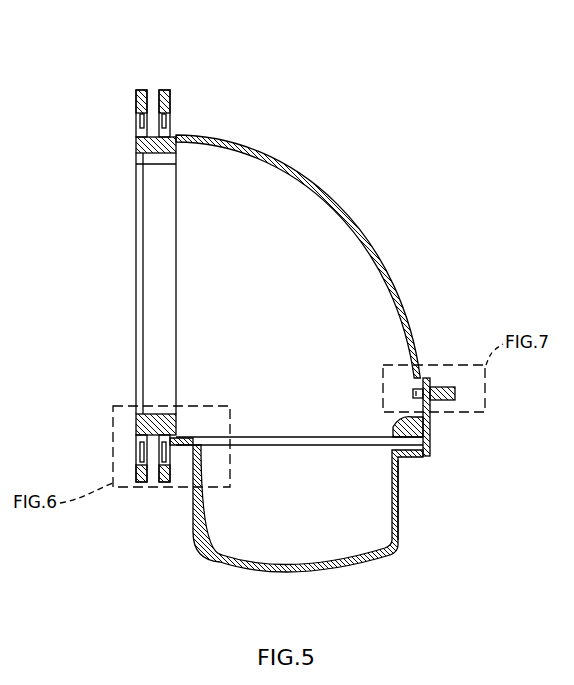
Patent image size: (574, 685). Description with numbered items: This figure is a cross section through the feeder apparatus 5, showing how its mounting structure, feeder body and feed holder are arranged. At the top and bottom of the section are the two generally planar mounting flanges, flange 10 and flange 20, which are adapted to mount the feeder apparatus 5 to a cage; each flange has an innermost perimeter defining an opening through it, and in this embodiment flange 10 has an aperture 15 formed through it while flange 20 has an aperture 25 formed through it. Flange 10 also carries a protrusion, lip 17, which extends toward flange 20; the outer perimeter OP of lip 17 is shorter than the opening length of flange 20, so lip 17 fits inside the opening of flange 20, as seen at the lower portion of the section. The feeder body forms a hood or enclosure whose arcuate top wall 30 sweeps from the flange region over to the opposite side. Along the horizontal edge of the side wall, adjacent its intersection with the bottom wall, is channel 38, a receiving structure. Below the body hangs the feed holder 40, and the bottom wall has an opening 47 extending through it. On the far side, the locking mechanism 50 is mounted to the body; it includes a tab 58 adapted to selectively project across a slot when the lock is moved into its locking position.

The feeder apparatus 5 is at (402, 197).
The flange 10 is at (141, 88).
The aperture 15 is at (137, 121).
The lip 17 is at (158, 154).
The flange 20 is at (165, 88).
The aperture 25 is at (172, 121).
The arcuate top wall 30 is at (393, 272).
The channel 38 is at (292, 441).
The feed holder 40 is at (388, 552).
The opening 47 is at (385, 476).
The locking mechanism 50 is at (460, 396).
The tab 58 is at (437, 428).
The outer perimeter OP is at (152, 435).